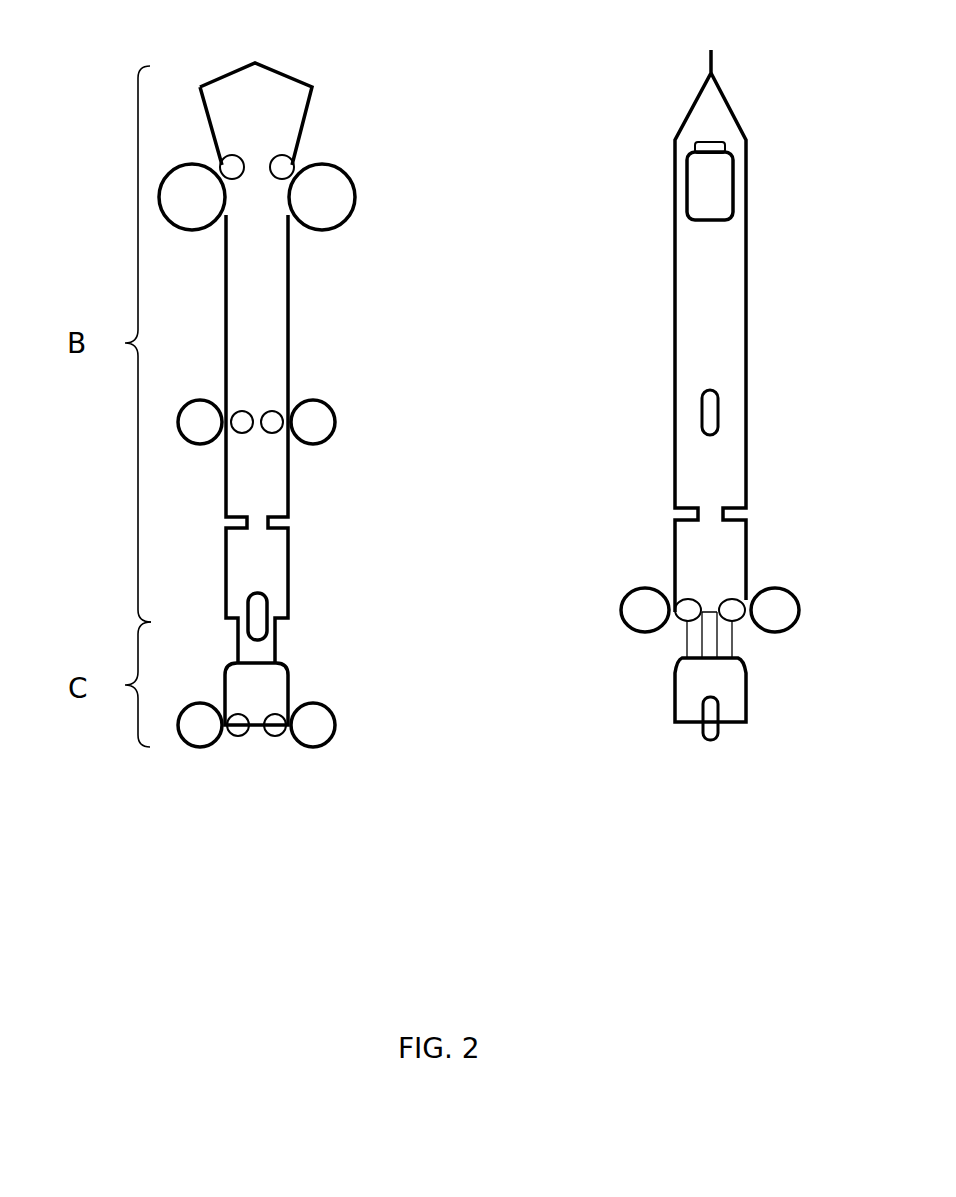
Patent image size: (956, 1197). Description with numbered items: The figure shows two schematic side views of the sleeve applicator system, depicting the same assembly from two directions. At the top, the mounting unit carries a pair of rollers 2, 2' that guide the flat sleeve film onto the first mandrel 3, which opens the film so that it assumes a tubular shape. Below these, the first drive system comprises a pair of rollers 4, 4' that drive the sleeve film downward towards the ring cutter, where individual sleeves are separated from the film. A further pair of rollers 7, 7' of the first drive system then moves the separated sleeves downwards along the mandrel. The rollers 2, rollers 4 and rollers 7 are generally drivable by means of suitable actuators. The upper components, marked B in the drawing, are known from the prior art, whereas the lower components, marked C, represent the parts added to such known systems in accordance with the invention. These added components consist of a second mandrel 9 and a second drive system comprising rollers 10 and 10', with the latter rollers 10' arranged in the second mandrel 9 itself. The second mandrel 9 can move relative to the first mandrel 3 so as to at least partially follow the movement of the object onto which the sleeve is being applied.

The mounting unit roller 2 is at (446, 160).
The mounting unit roller 2' is at (312, 105).
The first mandrel 3 is at (260, 338).
The first drive system roller 4 is at (448, 398).
The first drive system roller 4' is at (331, 375).
The roller for moving separated sleeves 7 is at (523, 590).
The roller for moving separated sleeves 7' is at (651, 542).
The second mandrel 9 is at (265, 690).
The second drive system roller 10 is at (422, 753).
The second drive system roller 10' is at (222, 782).